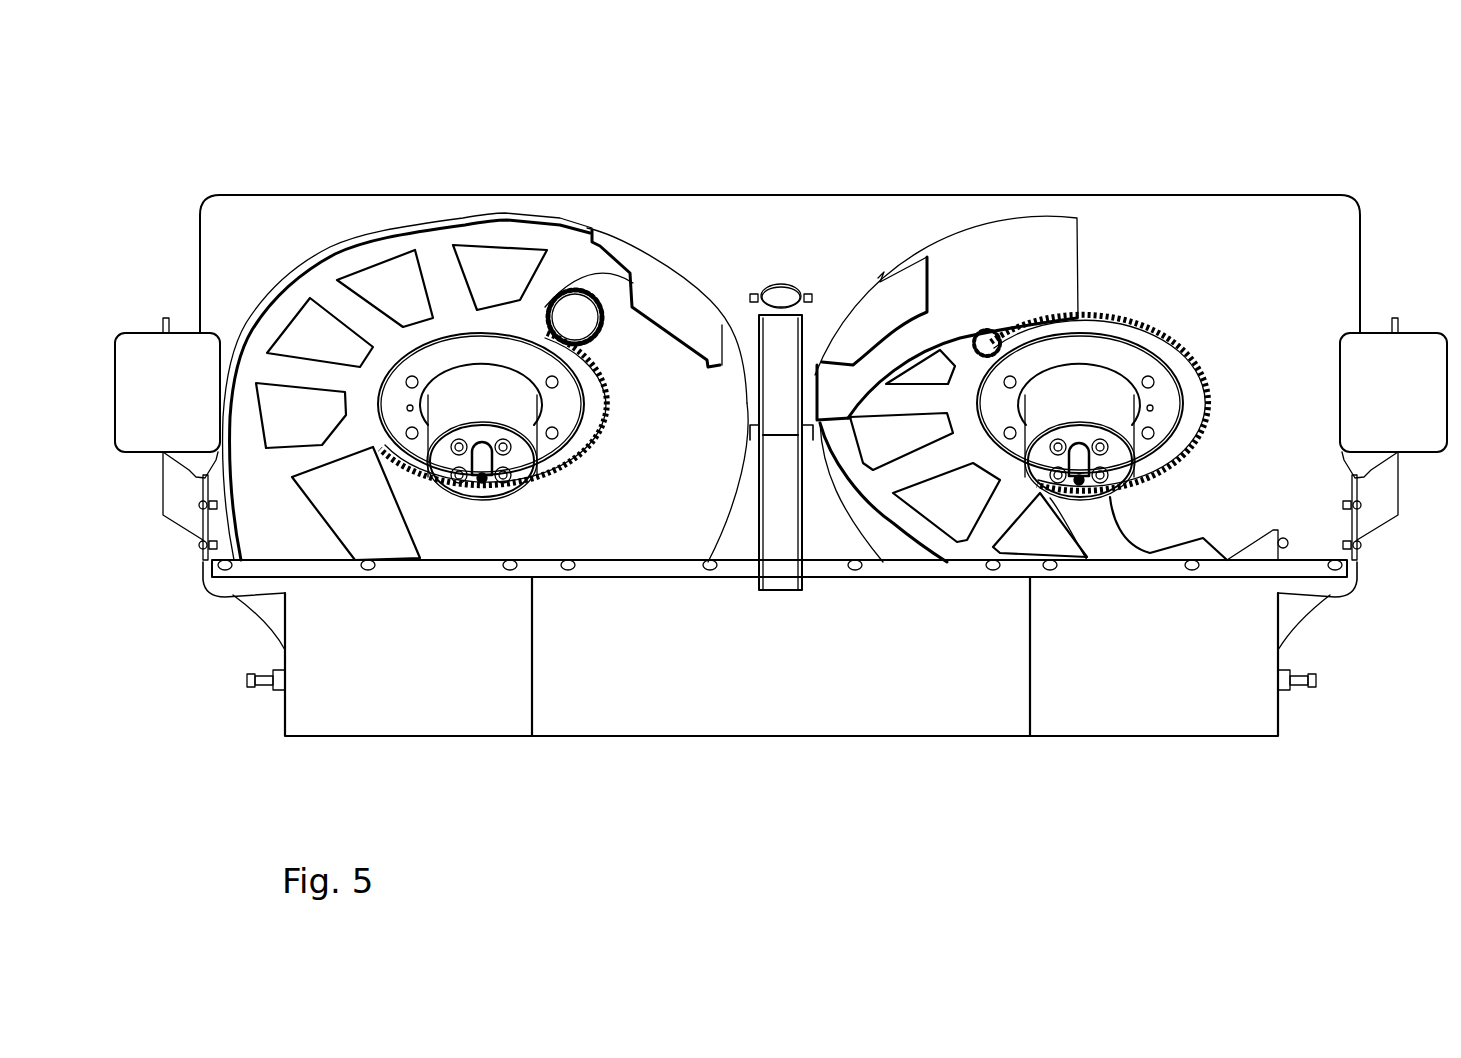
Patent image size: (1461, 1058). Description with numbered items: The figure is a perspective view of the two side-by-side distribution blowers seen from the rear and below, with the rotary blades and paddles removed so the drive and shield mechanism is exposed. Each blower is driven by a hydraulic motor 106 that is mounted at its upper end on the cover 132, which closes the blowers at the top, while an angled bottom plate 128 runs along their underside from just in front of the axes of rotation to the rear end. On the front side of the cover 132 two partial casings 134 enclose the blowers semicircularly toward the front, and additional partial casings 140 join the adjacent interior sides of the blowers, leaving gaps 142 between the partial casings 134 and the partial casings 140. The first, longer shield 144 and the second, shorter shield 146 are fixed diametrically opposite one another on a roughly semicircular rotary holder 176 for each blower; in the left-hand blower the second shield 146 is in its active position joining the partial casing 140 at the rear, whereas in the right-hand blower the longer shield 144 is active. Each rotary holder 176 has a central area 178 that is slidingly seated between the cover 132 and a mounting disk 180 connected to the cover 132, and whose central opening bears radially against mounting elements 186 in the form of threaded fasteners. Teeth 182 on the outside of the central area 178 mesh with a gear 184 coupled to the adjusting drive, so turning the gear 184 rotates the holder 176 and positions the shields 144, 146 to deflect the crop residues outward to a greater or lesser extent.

The hydraulic motor 106 is at (473, 393).
The bottom plate 128 is at (800, 700).
The cover 132 is at (887, 195).
The partial casing 134 is at (730, 520).
The partial casing 140 is at (727, 353).
The gap 142 is at (810, 410).
The first shield 144 is at (1013, 263).
The second shield 146 is at (670, 300).
The rotary holder 176 is at (375, 252).
The central area 178 is at (392, 455).
The mounting disk 180 is at (510, 357).
The teeth 182 is at (552, 478).
The gear 184 is at (577, 317).
The mounting element 186 is at (412, 440).